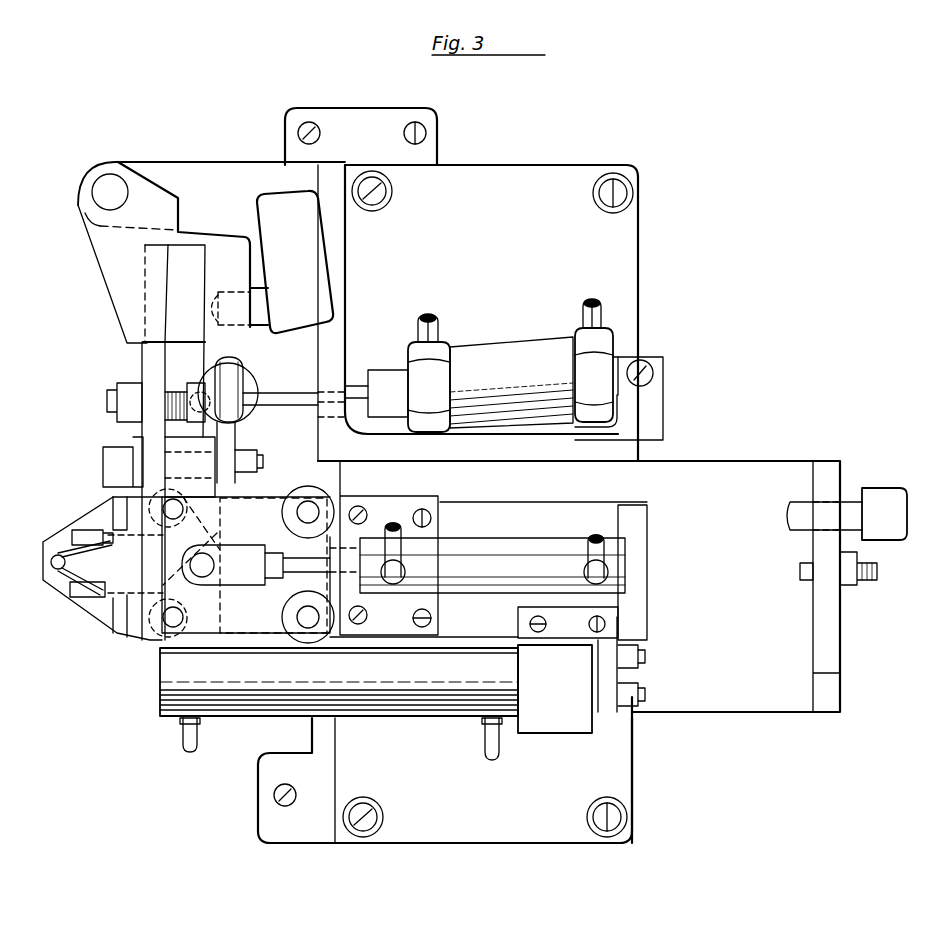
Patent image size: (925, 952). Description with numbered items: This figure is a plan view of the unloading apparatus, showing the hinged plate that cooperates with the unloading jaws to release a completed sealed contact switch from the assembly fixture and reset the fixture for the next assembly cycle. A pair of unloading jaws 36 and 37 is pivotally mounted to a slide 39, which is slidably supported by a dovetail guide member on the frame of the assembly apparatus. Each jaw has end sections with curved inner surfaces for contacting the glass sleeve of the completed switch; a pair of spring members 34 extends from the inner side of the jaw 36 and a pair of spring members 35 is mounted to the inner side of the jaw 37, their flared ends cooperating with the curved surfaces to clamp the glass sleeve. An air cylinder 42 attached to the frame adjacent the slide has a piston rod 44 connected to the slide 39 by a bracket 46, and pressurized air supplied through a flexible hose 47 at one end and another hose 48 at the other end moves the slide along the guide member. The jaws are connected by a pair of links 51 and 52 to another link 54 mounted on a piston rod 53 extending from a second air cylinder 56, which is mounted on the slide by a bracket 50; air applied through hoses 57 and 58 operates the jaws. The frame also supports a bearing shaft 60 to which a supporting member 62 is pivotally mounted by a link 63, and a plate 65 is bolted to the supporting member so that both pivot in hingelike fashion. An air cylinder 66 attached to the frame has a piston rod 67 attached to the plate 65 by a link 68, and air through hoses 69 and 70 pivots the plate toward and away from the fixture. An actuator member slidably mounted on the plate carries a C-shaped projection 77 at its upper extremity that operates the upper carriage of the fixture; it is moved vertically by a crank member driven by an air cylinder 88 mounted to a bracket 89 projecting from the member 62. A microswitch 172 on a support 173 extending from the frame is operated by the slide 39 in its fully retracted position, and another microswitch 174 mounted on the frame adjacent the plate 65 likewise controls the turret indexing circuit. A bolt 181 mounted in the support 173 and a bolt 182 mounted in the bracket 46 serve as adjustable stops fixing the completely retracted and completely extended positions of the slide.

The spring members 34 is at (85, 575).
The spring members 35 is at (88, 555).
The unloading jaw 36 is at (60, 611).
The unloading jaw 37 is at (64, 513).
The slide 39 is at (553, 507).
The air cylinder 42 is at (370, 713).
The piston rod 44 is at (605, 713).
The bracket 46 is at (612, 620).
The flexible hose 47 is at (183, 733).
The hose 48 is at (487, 740).
The bracket 50 is at (637, 547).
The link 51 is at (196, 648).
The link 52 is at (223, 564).
The piston rod 53 is at (350, 508).
The link 54 is at (243, 580).
The air cylinder 56 is at (527, 553).
The flexible hose 57 is at (605, 558).
The hose 58 is at (402, 550).
The bearing shaft 60 is at (108, 182).
The supporting member 62 is at (190, 258).
The link 63 is at (103, 258).
The plate 65 is at (143, 352).
The air cylinder 66 is at (507, 360).
The piston rod 67 is at (289, 398).
The link 68 is at (237, 433).
The flexible hose 69 is at (583, 305).
The hose 70 is at (432, 318).
The C-shaped projection 77 is at (92, 627).
The air cylinder 88 is at (245, 390).
The bracket 89 is at (235, 343).
The microswitch 172 is at (868, 492).
The support 173 is at (830, 658).
The microswitch 174 is at (317, 245).
The bolt 181 is at (870, 577).
The bolt 182 is at (640, 653).